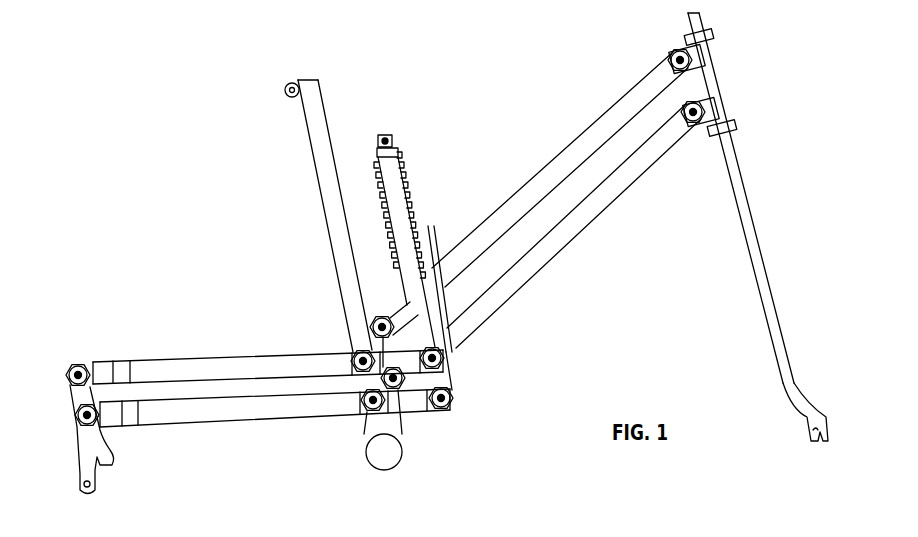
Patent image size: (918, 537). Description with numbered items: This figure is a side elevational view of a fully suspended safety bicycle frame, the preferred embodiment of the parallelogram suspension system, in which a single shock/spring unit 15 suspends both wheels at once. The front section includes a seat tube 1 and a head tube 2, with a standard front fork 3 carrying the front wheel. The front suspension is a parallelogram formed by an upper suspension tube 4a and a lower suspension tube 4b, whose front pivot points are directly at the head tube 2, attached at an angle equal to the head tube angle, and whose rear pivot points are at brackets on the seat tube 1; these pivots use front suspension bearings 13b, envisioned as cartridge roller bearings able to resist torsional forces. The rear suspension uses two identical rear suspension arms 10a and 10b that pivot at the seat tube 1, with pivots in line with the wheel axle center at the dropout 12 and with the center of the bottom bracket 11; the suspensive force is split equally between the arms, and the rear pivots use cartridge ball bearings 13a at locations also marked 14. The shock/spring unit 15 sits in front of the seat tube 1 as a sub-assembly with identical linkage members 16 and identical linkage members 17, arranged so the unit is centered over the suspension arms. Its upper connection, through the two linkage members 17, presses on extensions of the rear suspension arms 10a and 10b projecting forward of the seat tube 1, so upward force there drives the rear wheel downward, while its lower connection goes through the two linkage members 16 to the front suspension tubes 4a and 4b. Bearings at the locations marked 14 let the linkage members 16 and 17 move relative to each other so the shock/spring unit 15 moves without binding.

The seat tube 1 is at (320, 185).
The head tube 2 is at (712, 86).
The front fork 3 is at (760, 262).
The upper suspension tube 4a is at (538, 178).
The lower suspension tube 4b is at (585, 210).
The rear suspension arm 10a is at (200, 362).
The rear suspension arm 10b is at (220, 414).
The bottom bracket 11 is at (386, 471).
The dropout 12 is at (80, 449).
The rear pivot bearings 13a is at (75, 413).
The front suspension bearings 13b is at (677, 55).
The bearing locations 14 is at (393, 139).
The shock/spring unit 15 is at (422, 185).
The linkage members 16 is at (445, 326).
The linkage members 17 is at (403, 281).